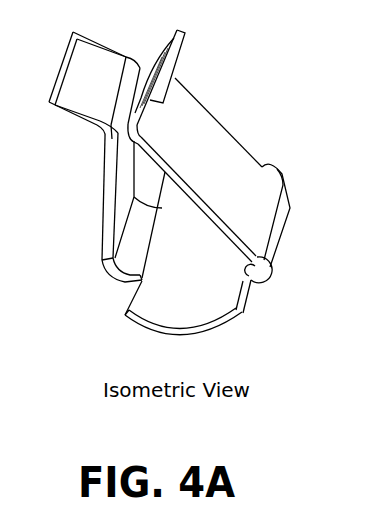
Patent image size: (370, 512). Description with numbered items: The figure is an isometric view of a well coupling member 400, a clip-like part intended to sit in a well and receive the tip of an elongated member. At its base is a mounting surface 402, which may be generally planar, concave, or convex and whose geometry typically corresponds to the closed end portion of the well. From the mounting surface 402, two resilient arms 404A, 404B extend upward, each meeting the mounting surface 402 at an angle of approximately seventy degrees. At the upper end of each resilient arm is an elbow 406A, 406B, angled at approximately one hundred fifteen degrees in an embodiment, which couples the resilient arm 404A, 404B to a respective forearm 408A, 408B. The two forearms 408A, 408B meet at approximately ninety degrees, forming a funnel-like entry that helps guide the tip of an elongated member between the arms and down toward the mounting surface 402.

The well coupling member 400 is at (193, 369).
The mounting surface 402 is at (220, 327).
The resilient arm 404A is at (105, 196).
The resilient arm 404B is at (225, 145).
The elbow 406A is at (110, 138).
The elbow 406B is at (141, 131).
The forearm 408A is at (85, 47).
The forearm 408B is at (157, 68).